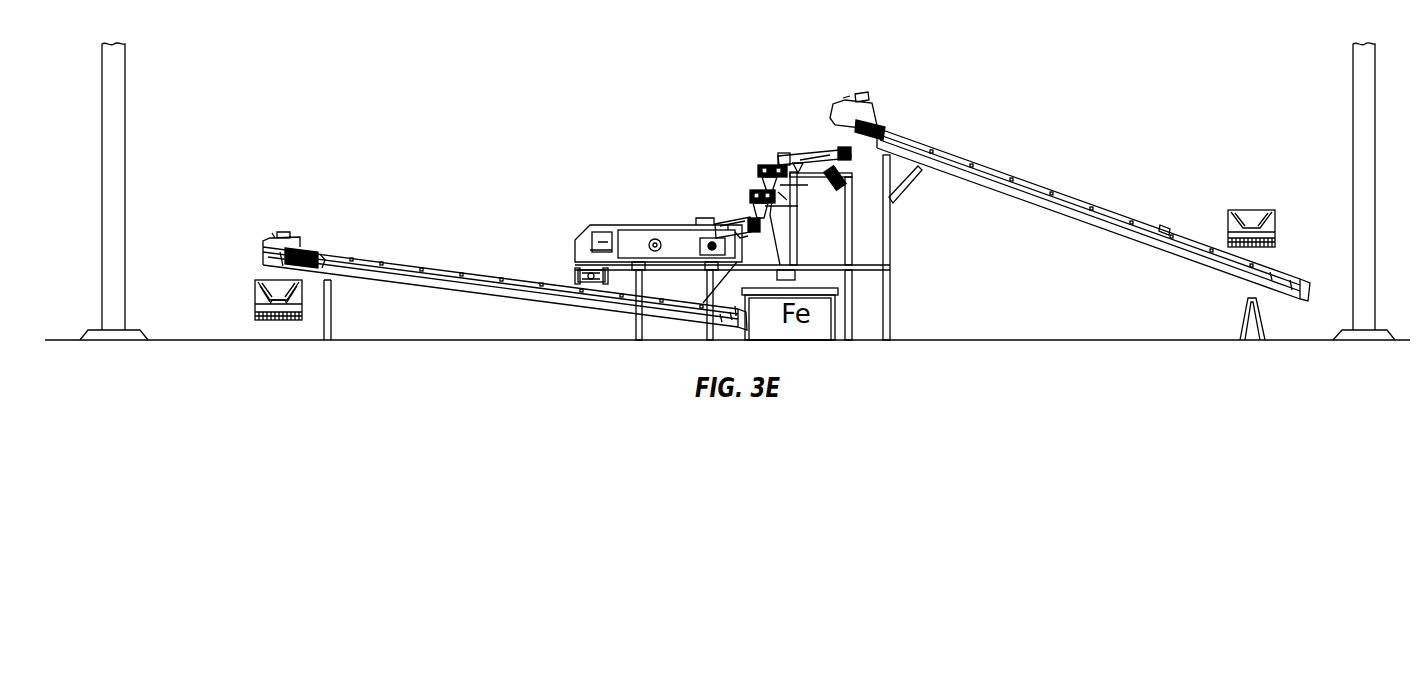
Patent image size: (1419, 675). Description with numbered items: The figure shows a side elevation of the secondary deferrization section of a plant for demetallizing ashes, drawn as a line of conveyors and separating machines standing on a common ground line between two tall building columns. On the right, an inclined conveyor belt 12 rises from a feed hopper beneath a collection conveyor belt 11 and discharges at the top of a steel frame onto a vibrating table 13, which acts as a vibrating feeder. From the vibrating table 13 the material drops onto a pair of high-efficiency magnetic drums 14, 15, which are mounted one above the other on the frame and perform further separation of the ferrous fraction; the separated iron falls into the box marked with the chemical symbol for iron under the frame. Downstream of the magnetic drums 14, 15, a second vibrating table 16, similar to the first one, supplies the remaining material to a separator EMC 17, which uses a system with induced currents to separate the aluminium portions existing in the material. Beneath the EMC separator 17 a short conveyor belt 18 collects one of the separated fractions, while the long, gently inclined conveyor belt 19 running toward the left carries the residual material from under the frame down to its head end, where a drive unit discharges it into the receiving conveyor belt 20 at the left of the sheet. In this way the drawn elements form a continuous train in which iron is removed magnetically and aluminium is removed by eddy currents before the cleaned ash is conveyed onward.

The conveyor belt 11 is at (1245, 225).
The conveyor belt 12 is at (1085, 205).
The vibrating table 13 is at (822, 160).
The magnetic drum 14 is at (765, 165).
The magnetic drum 15 is at (749, 189).
The vibrating table 16 is at (735, 216).
The separator EMC 17 is at (638, 238).
The conveyor belt 18 is at (580, 268).
The conveyor belt 19 is at (505, 285).
The conveyor belt 20 is at (258, 275).